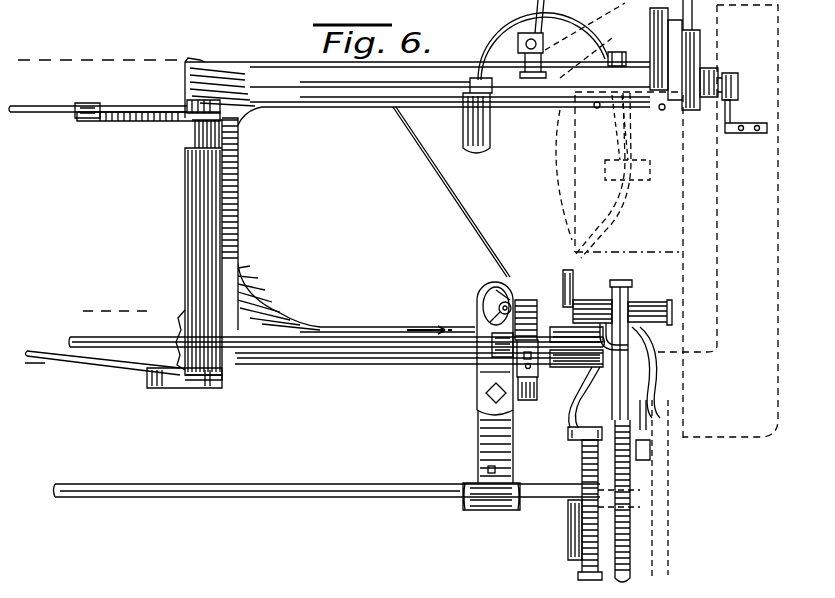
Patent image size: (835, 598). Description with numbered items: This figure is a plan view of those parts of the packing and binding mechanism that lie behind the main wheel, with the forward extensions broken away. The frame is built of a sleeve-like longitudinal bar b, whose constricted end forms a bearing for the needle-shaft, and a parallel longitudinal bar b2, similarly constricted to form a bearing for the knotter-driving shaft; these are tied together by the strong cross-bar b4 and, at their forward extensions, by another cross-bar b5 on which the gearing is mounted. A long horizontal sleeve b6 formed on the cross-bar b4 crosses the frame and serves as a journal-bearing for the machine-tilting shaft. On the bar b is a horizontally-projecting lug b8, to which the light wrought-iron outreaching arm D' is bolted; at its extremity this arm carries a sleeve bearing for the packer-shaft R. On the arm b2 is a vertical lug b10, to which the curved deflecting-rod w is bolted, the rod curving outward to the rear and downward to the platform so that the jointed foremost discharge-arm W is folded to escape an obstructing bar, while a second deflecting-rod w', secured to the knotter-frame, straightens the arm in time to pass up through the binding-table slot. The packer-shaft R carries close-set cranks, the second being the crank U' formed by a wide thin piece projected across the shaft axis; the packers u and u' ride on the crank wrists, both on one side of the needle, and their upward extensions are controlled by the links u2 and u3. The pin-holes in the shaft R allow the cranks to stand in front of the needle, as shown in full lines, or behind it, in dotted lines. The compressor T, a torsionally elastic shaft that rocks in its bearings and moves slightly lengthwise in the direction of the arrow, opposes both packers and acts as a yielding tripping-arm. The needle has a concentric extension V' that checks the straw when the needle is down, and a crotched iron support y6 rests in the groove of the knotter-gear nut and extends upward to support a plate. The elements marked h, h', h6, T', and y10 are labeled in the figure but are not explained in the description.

The sleeve-like longitudinal bar b is at (397, 353).
The longitudinal bar b2 is at (379, 88).
The cross-bar b4 is at (230, 176).
The cross-bar b5 is at (480, 390).
The horizontal sleeve b6 is at (200, 167).
The horizontally-projecting lug b8 is at (501, 285).
The vertical lug b10 is at (470, 100).
The bracket h is at (123, 380).
The rod h' is at (98, 105).
The rack h6 is at (148, 121).
The compressor T is at (633, 339).
The bar T' is at (337, 365).
The horizontally outreaching arm D' is at (476, 460).
The packer-shaft R is at (327, 505).
The curved deflecting-rod w is at (543, 44).
The foremost discharge-arm W is at (542, 39).
The deflecting-rod w' is at (606, 175).
The crotched iron support y6 is at (746, 116).
The hub y10 is at (675, 60).
The packer u is at (584, 510).
The packer u' is at (650, 421).
The link u2 is at (655, 360).
The link u3 is at (599, 383).
The crank U' is at (583, 501).
The concentric extension V' is at (643, 460).